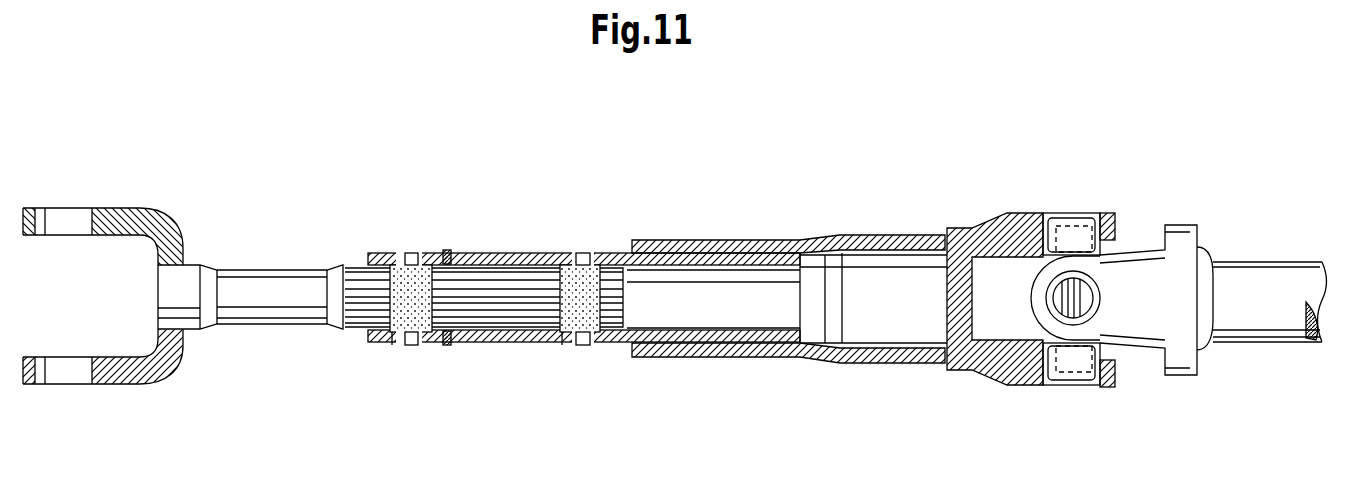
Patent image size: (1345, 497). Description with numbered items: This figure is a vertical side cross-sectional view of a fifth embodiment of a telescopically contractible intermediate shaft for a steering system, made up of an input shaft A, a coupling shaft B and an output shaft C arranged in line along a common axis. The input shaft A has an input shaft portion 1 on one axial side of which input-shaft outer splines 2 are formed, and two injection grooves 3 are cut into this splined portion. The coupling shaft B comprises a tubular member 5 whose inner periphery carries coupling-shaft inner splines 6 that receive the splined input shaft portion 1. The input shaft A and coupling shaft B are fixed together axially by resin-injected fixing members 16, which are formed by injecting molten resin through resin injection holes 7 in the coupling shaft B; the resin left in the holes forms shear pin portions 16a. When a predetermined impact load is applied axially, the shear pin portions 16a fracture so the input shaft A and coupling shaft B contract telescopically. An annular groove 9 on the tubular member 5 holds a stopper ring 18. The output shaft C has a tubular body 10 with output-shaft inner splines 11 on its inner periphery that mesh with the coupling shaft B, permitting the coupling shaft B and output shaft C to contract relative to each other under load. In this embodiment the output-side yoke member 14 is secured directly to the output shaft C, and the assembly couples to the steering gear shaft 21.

The input shaft A is at (275, 258).
The coupling shaft B is at (520, 255).
The output shaft C is at (725, 240).
The input shaft portion 1 is at (290, 329).
The input-shaft outer splines 2 is at (483, 343).
The injection grooves 3 is at (392, 346).
The tubular member 5 is at (483, 253).
The coupling-shaft inner splines 6 is at (516, 326).
The resin injection holes 7 is at (410, 345).
The annular groove 9 is at (447, 250).
The tubular body 10 is at (690, 357).
The output-shaft inner splines 11 is at (725, 358).
The output-side yoke member 14 is at (1025, 212).
The resin-injected fixing members 16 is at (400, 264).
The shear pin portions 16a is at (412, 253).
The stopper ring 18 is at (451, 252).
The steering gear shaft 21 is at (1270, 262).